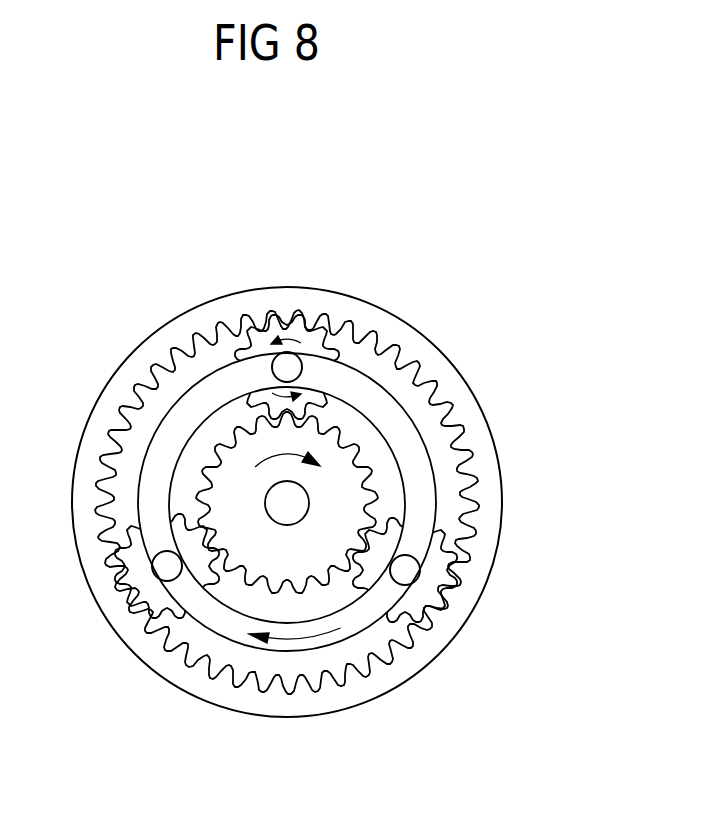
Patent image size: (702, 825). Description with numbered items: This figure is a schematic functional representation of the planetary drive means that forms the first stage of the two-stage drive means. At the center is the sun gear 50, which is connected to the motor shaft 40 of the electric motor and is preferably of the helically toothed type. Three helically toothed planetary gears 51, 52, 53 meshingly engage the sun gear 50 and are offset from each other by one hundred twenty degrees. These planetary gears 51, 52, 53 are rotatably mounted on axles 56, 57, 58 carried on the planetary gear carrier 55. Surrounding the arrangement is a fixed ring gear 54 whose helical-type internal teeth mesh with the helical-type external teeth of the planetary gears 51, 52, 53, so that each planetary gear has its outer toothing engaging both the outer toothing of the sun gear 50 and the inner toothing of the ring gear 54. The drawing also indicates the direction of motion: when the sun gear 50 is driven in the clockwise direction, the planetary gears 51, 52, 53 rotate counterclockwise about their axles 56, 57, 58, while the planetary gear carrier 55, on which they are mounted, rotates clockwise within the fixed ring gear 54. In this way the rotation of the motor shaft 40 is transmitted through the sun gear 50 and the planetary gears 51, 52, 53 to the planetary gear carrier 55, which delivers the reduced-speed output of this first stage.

The motor shaft 40 is at (290, 503).
The sun gear 50 is at (342, 485).
The planetary gear 51 is at (303, 325).
The planetary gear 52 is at (450, 605).
The planetary gear 53 is at (137, 572).
The ring gear 54 is at (485, 533).
The planetary gear carrier 55 is at (395, 422).
The axle 56 is at (282, 365).
The axle 57 is at (403, 573).
The axle 58 is at (165, 567).